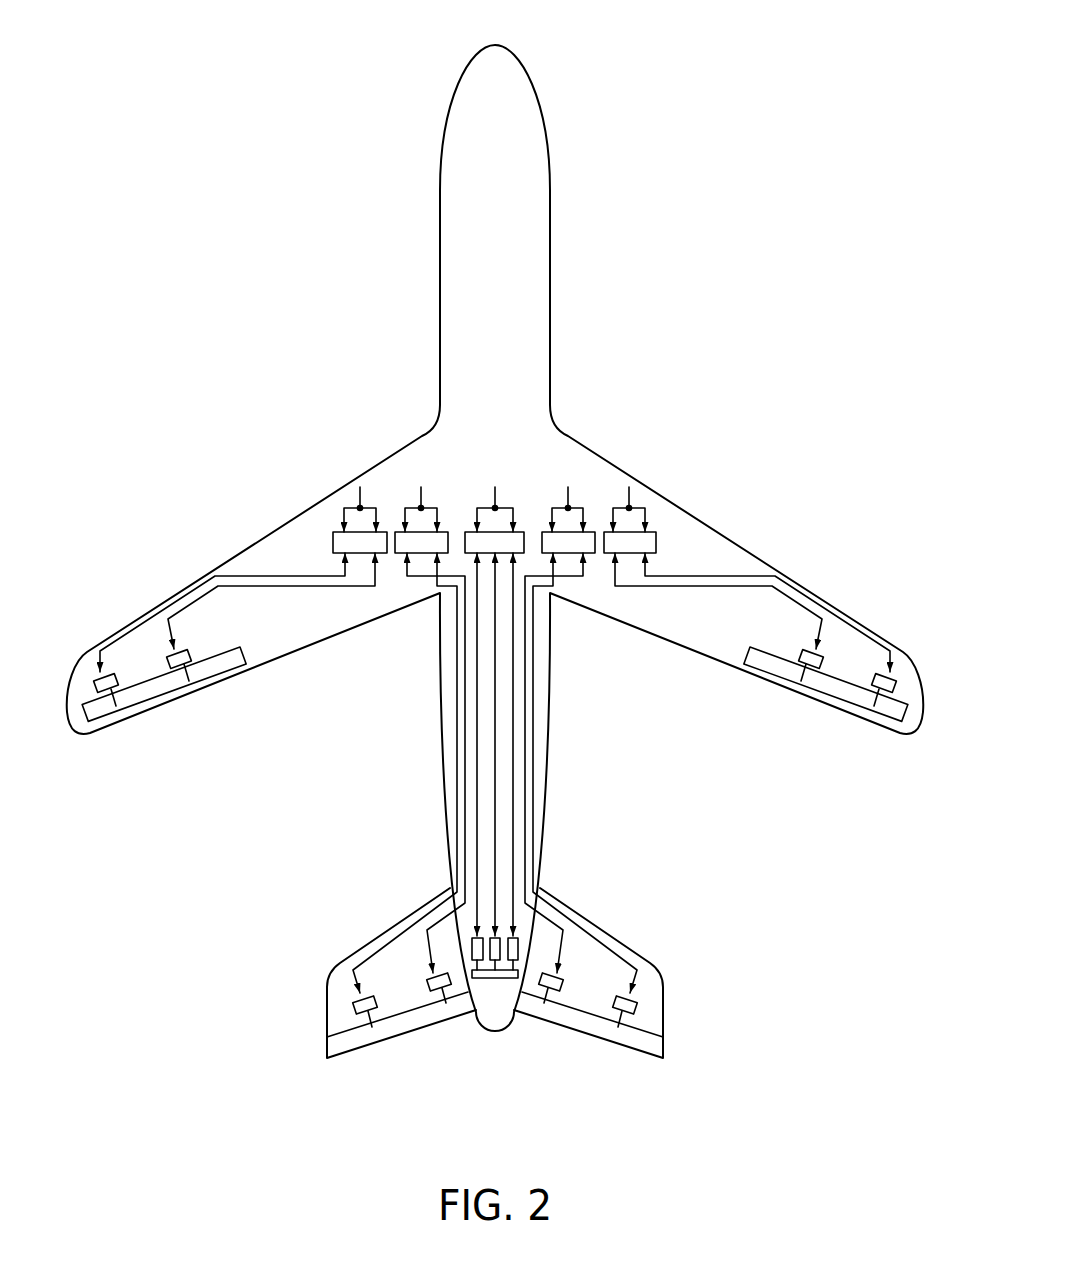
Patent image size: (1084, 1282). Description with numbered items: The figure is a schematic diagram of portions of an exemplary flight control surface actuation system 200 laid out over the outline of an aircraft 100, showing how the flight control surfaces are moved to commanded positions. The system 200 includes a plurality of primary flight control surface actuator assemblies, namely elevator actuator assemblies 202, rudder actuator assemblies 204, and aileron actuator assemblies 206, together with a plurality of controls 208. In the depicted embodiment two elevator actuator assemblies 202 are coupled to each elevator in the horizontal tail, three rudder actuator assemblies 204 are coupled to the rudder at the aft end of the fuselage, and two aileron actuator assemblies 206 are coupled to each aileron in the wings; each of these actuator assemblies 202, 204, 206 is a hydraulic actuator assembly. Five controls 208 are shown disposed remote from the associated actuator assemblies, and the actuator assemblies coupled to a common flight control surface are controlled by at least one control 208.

The aircraft 100 is at (525, 68).
The flight control surface actuation system 200 is at (672, 310).
The elevator actuator assemblies 202 is at (430, 977).
The rudder actuator assemblies 204 is at (472, 946).
The aileron actuator assemblies 206 is at (801, 660).
The controls 208 is at (333, 538).